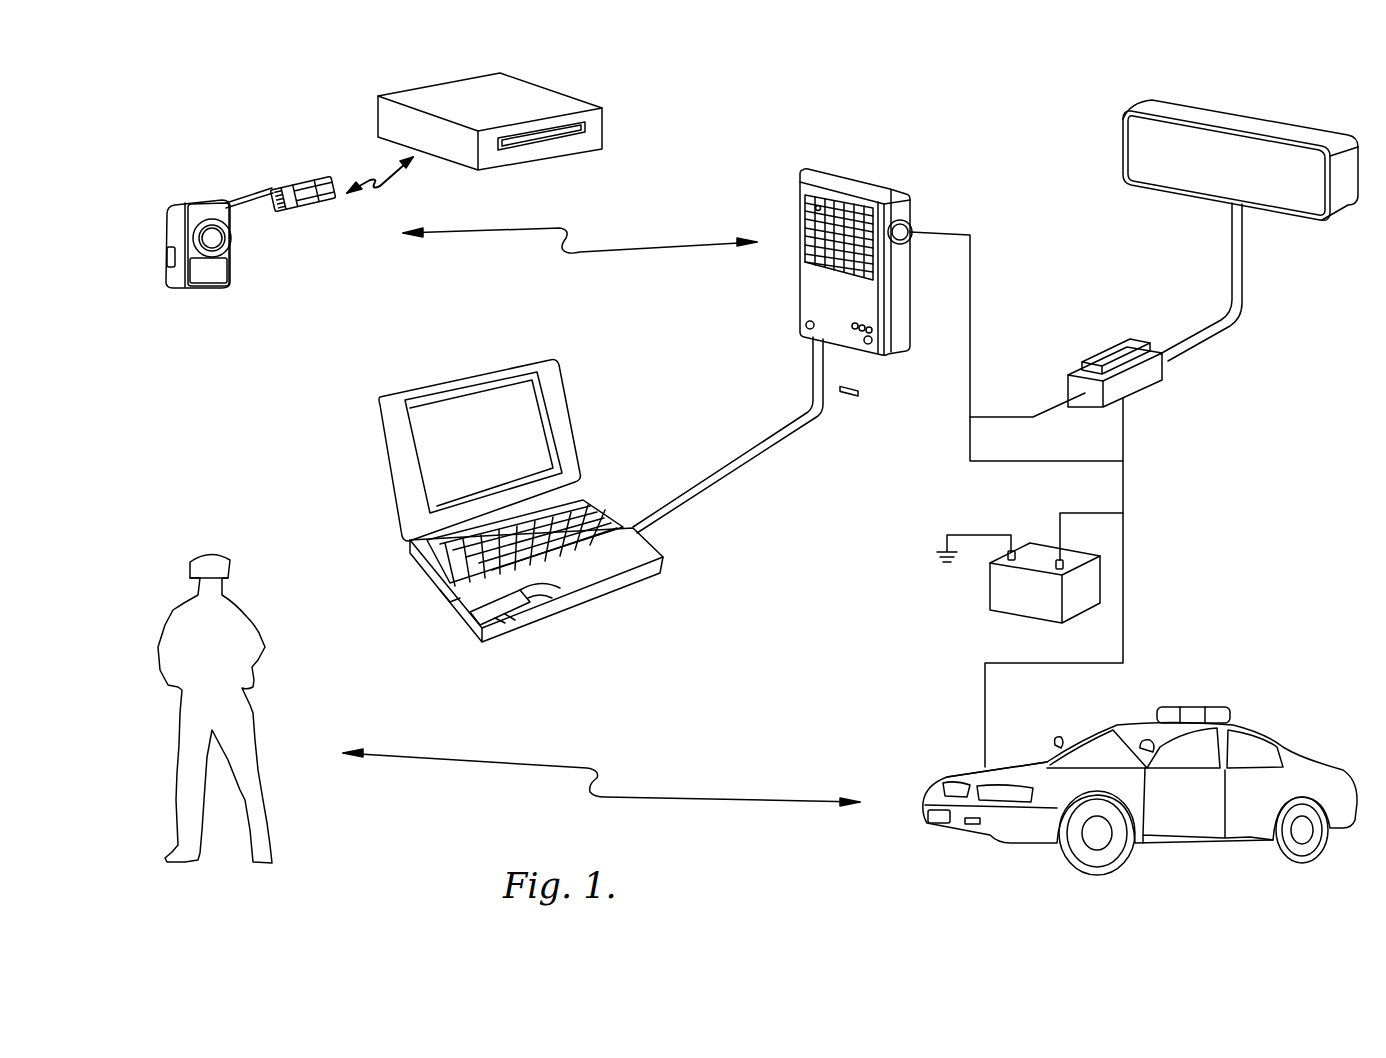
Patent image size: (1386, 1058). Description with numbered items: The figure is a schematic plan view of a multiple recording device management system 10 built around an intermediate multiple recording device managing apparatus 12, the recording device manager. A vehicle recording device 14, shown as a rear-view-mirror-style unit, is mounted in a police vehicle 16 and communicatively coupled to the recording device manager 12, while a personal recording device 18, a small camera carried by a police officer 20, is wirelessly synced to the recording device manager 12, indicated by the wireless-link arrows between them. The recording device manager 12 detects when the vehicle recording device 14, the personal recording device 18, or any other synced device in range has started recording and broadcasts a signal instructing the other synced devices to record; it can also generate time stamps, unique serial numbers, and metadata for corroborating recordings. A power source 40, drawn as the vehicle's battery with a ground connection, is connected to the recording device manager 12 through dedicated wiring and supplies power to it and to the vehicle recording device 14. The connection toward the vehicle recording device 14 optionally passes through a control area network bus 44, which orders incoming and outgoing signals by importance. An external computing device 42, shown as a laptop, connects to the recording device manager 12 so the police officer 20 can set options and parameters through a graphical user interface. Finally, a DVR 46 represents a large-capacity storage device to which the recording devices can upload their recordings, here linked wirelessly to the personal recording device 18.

The multiple recording device management system 10 is at (737, 140).
The intermediate multiple recording device managing apparatus 12 is at (895, 170).
The vehicle recording device 14 is at (1272, 120).
The police vehicle 16 is at (1267, 728).
The personal recording device 18 is at (184, 203).
The police officer 20 is at (232, 603).
The power source 40 is at (990, 596).
The external computing device 42 is at (392, 459).
The control area network (CAN) bus 44 is at (1113, 352).
The DVR 46 is at (394, 120).